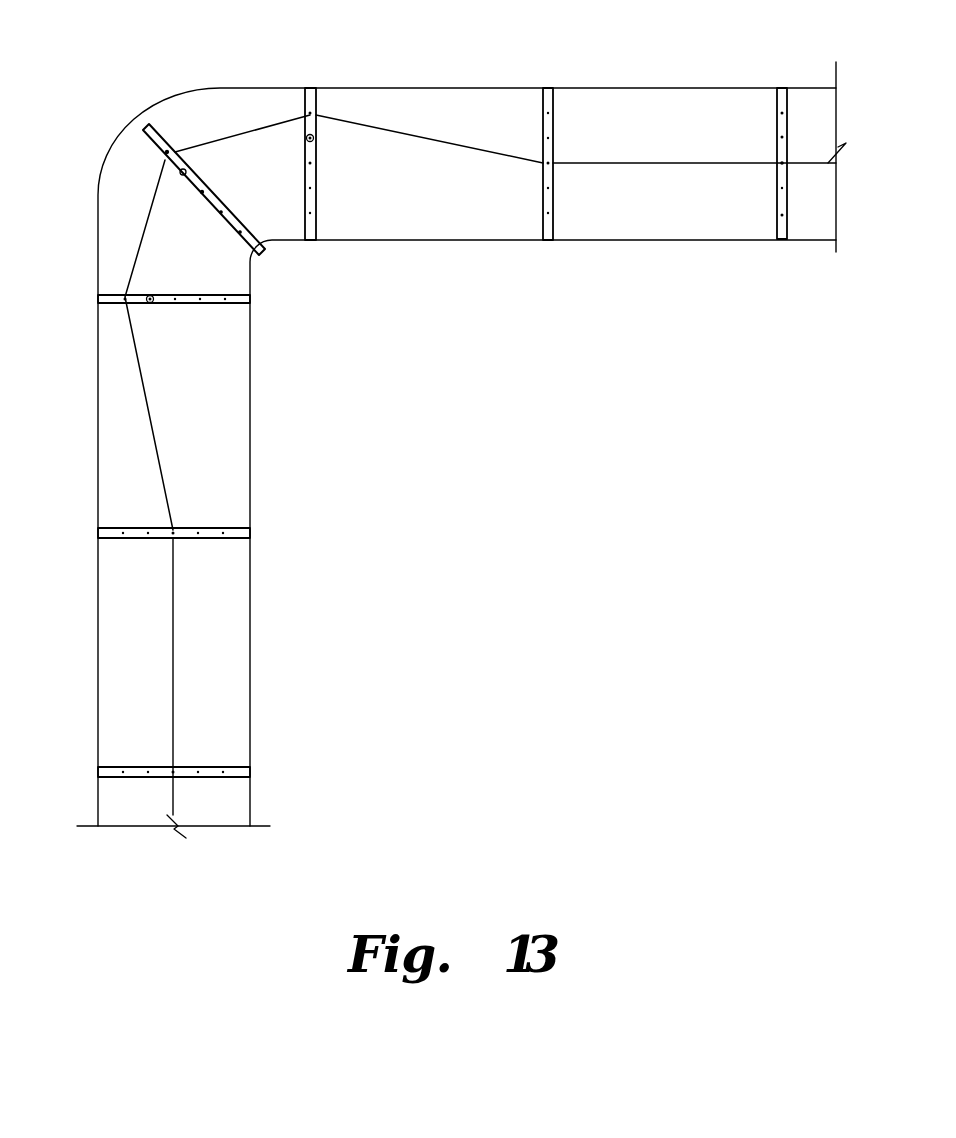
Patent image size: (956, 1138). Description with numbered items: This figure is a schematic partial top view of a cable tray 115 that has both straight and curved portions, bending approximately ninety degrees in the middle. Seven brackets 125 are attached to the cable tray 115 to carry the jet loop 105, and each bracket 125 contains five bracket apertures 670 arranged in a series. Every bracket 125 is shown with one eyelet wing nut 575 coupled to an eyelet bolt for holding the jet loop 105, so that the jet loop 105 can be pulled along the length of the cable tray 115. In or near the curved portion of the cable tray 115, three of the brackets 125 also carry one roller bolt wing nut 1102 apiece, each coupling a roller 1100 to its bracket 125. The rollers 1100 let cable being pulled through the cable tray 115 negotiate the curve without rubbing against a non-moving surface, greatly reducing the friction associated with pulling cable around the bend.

The jet loop 105 is at (172, 653).
The cable tray 115 is at (805, 240).
The bracket 125 is at (548, 88).
The eyelet wing nut 575 is at (165, 153).
The bracket aperture 670 is at (777, 113).
The roller 1100 is at (305, 138).
The roller bolt wing nut 1102 is at (175, 148).